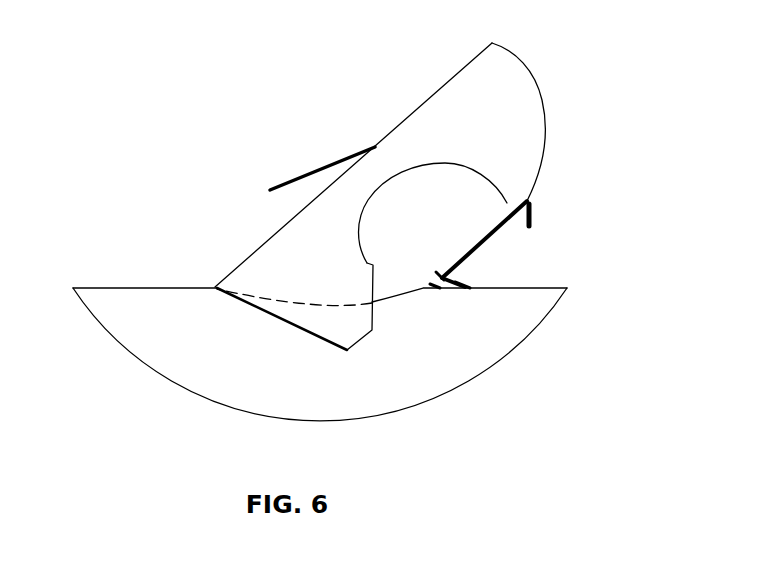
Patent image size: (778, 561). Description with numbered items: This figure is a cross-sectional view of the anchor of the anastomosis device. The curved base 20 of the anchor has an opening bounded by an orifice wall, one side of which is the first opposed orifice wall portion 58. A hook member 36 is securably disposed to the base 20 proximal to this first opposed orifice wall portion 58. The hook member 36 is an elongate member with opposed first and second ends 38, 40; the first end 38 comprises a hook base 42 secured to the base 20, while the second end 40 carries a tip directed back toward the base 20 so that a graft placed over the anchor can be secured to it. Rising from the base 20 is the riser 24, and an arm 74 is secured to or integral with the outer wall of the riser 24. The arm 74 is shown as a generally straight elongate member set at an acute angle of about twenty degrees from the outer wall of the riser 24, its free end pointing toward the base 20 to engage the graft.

The base 20 is at (458, 358).
The riser 24 is at (433, 93).
The hook member 36 is at (477, 233).
The first opposed end of the hook member 38 is at (438, 270).
The second opposed end of the hook member 40 is at (540, 203).
The hook base 42 is at (462, 282).
The first opposed orifice wall portion 58 is at (432, 285).
The arm 74 is at (317, 167).